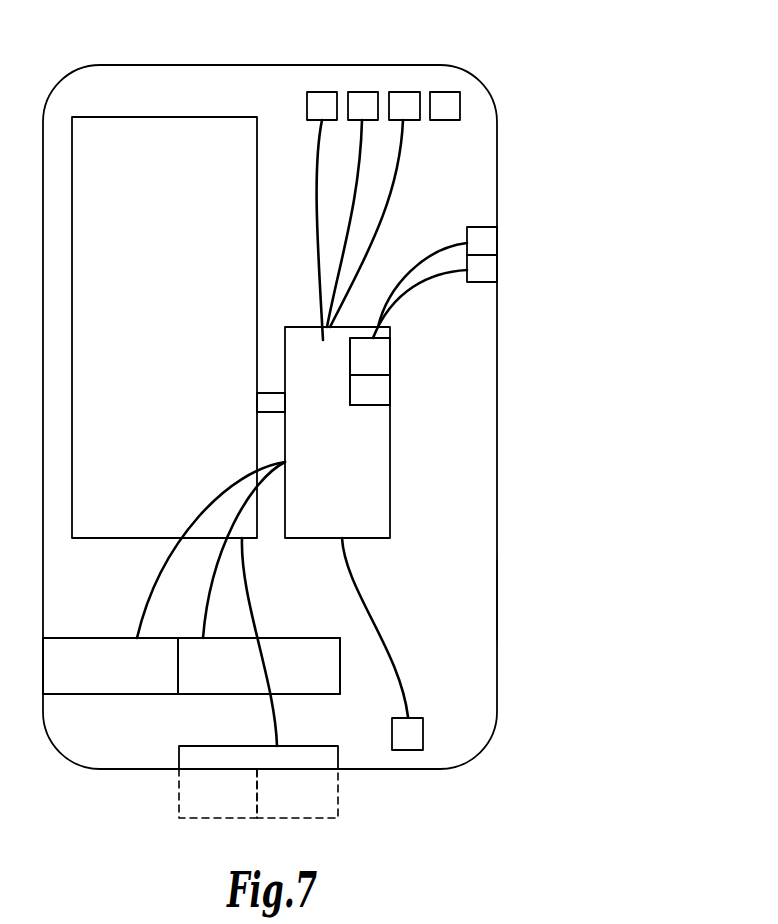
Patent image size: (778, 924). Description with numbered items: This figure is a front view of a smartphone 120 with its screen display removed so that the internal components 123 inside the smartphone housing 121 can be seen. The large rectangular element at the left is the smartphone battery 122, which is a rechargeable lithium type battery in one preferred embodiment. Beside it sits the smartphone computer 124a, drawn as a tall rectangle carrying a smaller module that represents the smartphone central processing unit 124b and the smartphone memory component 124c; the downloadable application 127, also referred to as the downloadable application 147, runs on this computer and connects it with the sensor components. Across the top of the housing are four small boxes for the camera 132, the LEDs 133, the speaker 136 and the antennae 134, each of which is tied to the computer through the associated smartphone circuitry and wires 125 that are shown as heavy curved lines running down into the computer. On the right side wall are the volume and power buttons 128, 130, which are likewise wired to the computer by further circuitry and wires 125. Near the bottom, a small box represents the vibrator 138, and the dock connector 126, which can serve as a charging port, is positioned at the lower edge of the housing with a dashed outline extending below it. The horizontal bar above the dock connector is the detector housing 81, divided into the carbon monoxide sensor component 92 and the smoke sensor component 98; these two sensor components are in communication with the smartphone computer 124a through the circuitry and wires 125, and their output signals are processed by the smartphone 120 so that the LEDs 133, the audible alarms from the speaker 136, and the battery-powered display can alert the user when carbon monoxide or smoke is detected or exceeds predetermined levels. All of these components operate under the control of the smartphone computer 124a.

The detector housing 81 is at (103, 694).
The carbon monoxide sensor component 92 is at (115, 648).
The smoke sensor component 98 is at (285, 648).
The smartphone 120 is at (183, 77).
The smartphone housing 121 is at (498, 595).
The smartphone battery 122 is at (170, 318).
The internal components 123 is at (457, 204).
The smartphone computer 124a is at (368, 514).
The smartphone central processing unit 124b is at (377, 390).
The smartphone memory component 124c is at (385, 353).
The smartphone circuitry and wires 125 is at (318, 183).
The dock connector 126 is at (190, 761).
The downloadable application 127 is at (372, 362).
The volume button 128 is at (488, 240).
The power button 130 is at (488, 268).
The camera 132 is at (362, 97).
The LEDs 133 is at (322, 97).
The antennae 134 is at (446, 98).
The speaker 136 is at (405, 100).
The vibrator 138 is at (407, 740).
The downloadable application 147 is at (370, 447).